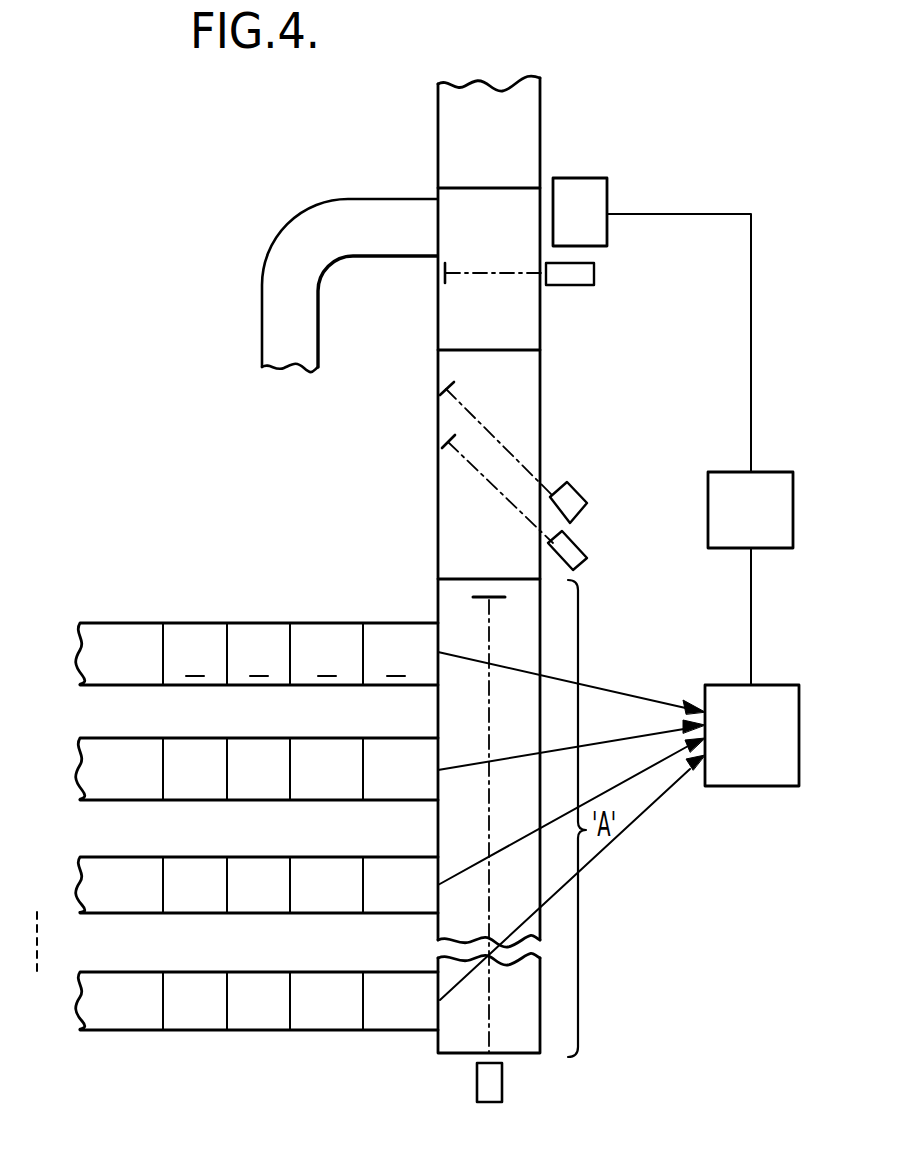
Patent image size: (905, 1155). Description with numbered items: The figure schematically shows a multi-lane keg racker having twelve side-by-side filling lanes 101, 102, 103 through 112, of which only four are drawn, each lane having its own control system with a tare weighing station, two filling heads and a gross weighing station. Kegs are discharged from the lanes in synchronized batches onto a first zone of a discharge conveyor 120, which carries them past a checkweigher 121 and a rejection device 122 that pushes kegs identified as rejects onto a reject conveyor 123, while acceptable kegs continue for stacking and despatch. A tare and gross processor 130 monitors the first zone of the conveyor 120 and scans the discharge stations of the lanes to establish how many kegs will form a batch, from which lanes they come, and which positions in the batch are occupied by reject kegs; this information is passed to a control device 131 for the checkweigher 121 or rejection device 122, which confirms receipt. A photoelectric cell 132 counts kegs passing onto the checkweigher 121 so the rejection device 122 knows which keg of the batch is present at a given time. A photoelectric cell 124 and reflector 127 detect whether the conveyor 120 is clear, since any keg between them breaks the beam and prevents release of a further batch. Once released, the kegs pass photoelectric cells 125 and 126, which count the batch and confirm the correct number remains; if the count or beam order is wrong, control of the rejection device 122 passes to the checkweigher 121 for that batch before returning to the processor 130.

The lane 101 is at (226, 654).
The lane 102 is at (226, 769).
The lane 103 is at (227, 885).
The lane 112 is at (229, 1001).
The discharge conveyor 120 is at (438, 535).
The checkweigher 121 is at (536, 317).
The rejection device 122 is at (587, 182).
The reject conveyor 123 is at (268, 291).
The photoelectric cell 124 is at (477, 1085).
The photoelectric cell 125 is at (584, 512).
The photoelectric cell 126 is at (579, 567).
The reflector 127 is at (483, 593).
The tare and gross processor 130 is at (726, 786).
The control device 131 is at (708, 527).
The photoelectric cell 132 is at (585, 272).